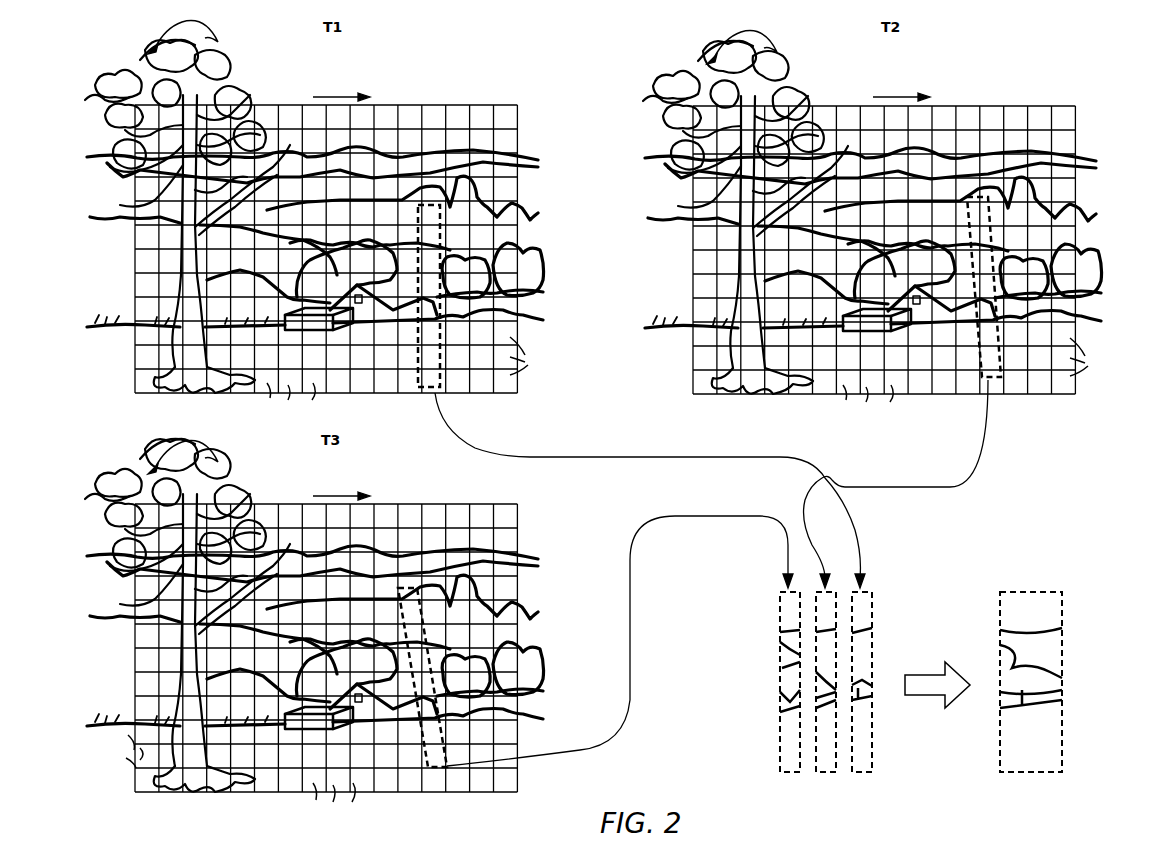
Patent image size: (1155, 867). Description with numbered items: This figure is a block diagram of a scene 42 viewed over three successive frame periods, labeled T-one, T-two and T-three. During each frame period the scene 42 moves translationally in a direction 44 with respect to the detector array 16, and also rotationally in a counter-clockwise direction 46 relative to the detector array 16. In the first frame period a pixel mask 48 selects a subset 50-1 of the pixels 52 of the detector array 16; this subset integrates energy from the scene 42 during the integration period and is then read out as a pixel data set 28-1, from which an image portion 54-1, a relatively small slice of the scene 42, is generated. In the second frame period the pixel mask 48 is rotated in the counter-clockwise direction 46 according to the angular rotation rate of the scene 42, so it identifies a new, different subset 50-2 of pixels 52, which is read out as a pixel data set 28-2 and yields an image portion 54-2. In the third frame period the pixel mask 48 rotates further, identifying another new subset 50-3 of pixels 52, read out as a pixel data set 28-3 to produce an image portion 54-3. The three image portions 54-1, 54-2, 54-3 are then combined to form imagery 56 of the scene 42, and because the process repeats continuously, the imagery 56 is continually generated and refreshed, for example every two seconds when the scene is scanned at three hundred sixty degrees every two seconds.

The detector array 16 is at (507, 105).
The scene 42 is at (88, 92).
The direction 44 is at (333, 97).
The counter-clockwise direction 46 is at (218, 42).
The pixel mask 48 is at (418, 355).
The subset of pixels 50-1 is at (428, 218).
The subset of pixels 50-2 is at (980, 215).
The subset of pixels 50-3 is at (418, 611).
The pixels 52 is at (315, 398).
The pixel data set 28-1 is at (605, 457).
The pixel data set 28-2 is at (918, 487).
The pixel data set 28-3 is at (695, 516).
The image portion 54-1 is at (868, 775).
The image portion 54-2 is at (830, 775).
The image portion 54-3 is at (788, 775).
The imagery 56 is at (1040, 592).